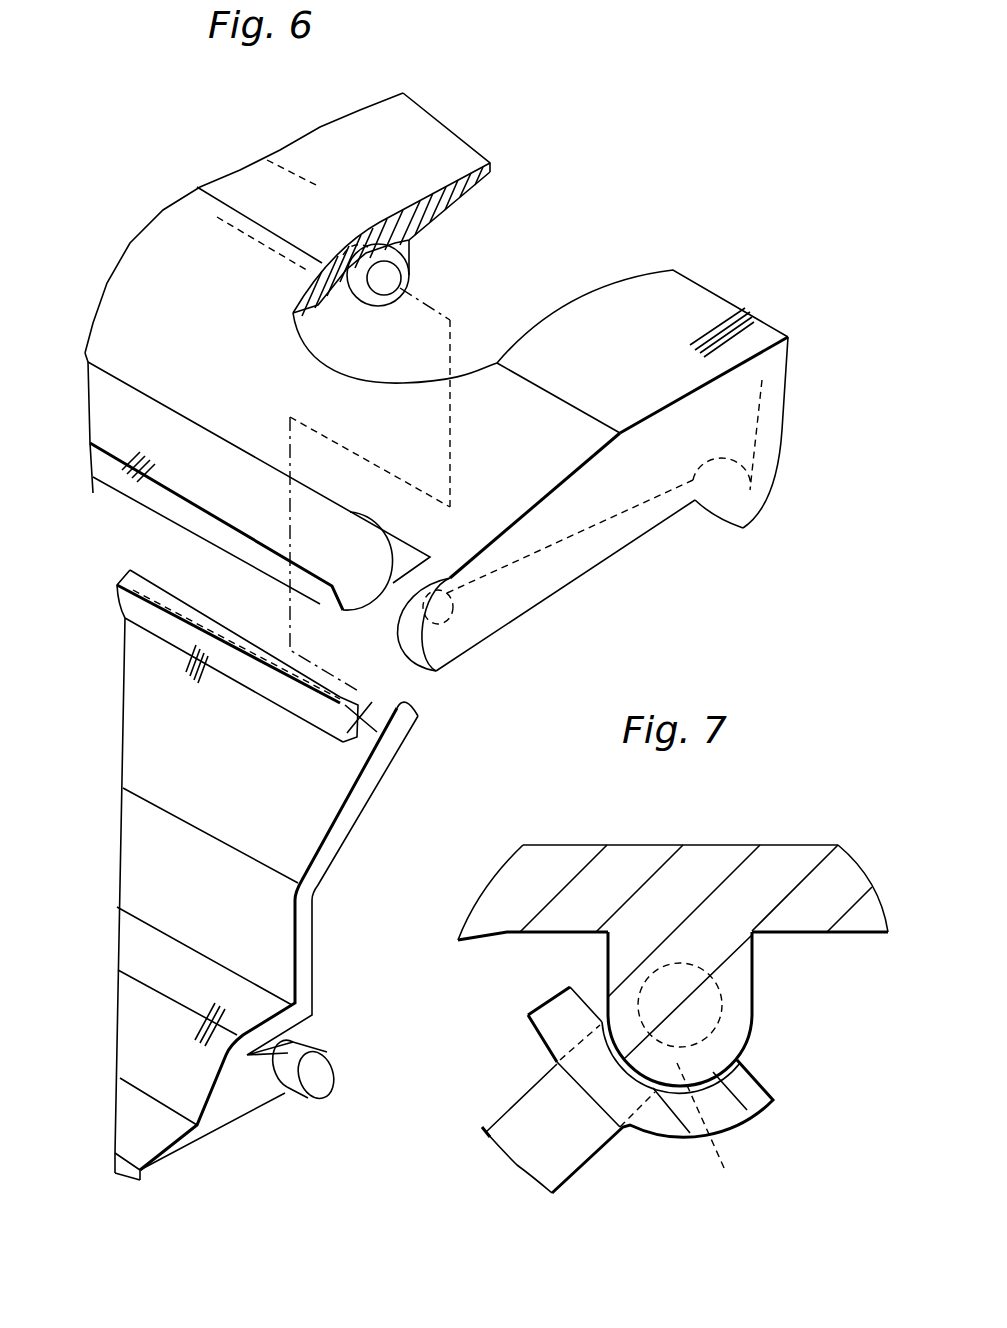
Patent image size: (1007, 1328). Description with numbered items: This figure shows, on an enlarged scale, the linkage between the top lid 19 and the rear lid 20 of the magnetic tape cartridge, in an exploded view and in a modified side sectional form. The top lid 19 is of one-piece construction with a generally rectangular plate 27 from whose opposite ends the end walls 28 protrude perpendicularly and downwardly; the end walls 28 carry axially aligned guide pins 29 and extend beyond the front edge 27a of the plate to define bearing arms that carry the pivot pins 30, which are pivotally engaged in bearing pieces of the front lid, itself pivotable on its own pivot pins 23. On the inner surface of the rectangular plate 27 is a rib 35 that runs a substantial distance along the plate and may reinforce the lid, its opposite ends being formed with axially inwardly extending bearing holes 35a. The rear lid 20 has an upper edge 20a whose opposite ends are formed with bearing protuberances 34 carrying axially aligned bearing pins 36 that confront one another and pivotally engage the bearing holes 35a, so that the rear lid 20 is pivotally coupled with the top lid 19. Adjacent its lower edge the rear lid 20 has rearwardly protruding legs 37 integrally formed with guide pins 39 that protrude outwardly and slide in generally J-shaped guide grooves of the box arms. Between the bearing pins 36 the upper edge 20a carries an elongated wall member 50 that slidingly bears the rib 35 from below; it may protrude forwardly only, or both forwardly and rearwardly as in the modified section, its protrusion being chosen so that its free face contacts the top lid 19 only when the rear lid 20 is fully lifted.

In FIG. 6, the top lid 19 is at (160, 212).
In FIG. 7, the top lid 19 is at (798, 835).
In FIG. 6, the rectangular plate 27 is at (455, 147).
In FIG. 7, the rectangular plate 27 is at (552, 857).
In FIG. 6, the front edge 27a is at (100, 380).
In FIG. 6, the rib 35 is at (353, 262).
In FIG. 7, the rib 35 is at (753, 1023).
In FIG. 6, the bearing holes 35a is at (388, 277).
In FIG. 7, the bearing holes 35a is at (717, 990).
In FIG. 6, the bearing pins 36 is at (352, 675).
In FIG. 7, the bearing pins 36 is at (745, 1050).
In FIG. 6, the end walls 28 is at (592, 500).
In FIG. 6, the guide pins 29 is at (713, 468).
In FIG. 6, the pivot pins 23 is at (437, 672).
In FIG. 6, the pivot pins 30 is at (396, 603).
In FIG. 6, the elongated wall member 50 is at (183, 603).
In FIG. 7, the elongated wall member 50 is at (528, 1020).
In FIG. 6, the upper edge 20a is at (240, 625).
In FIG. 6, the rear lid 20 is at (345, 852).
In FIG. 7, the rear lid 20 is at (595, 1154).
In FIG. 6, the bearing protuberances 34 is at (420, 706).
In FIG. 7, the bearing protuberances 34 is at (693, 1047).
In FIG. 6, the guide pins 39 is at (315, 1082).
In FIG. 6, the legs 37 is at (263, 1107).